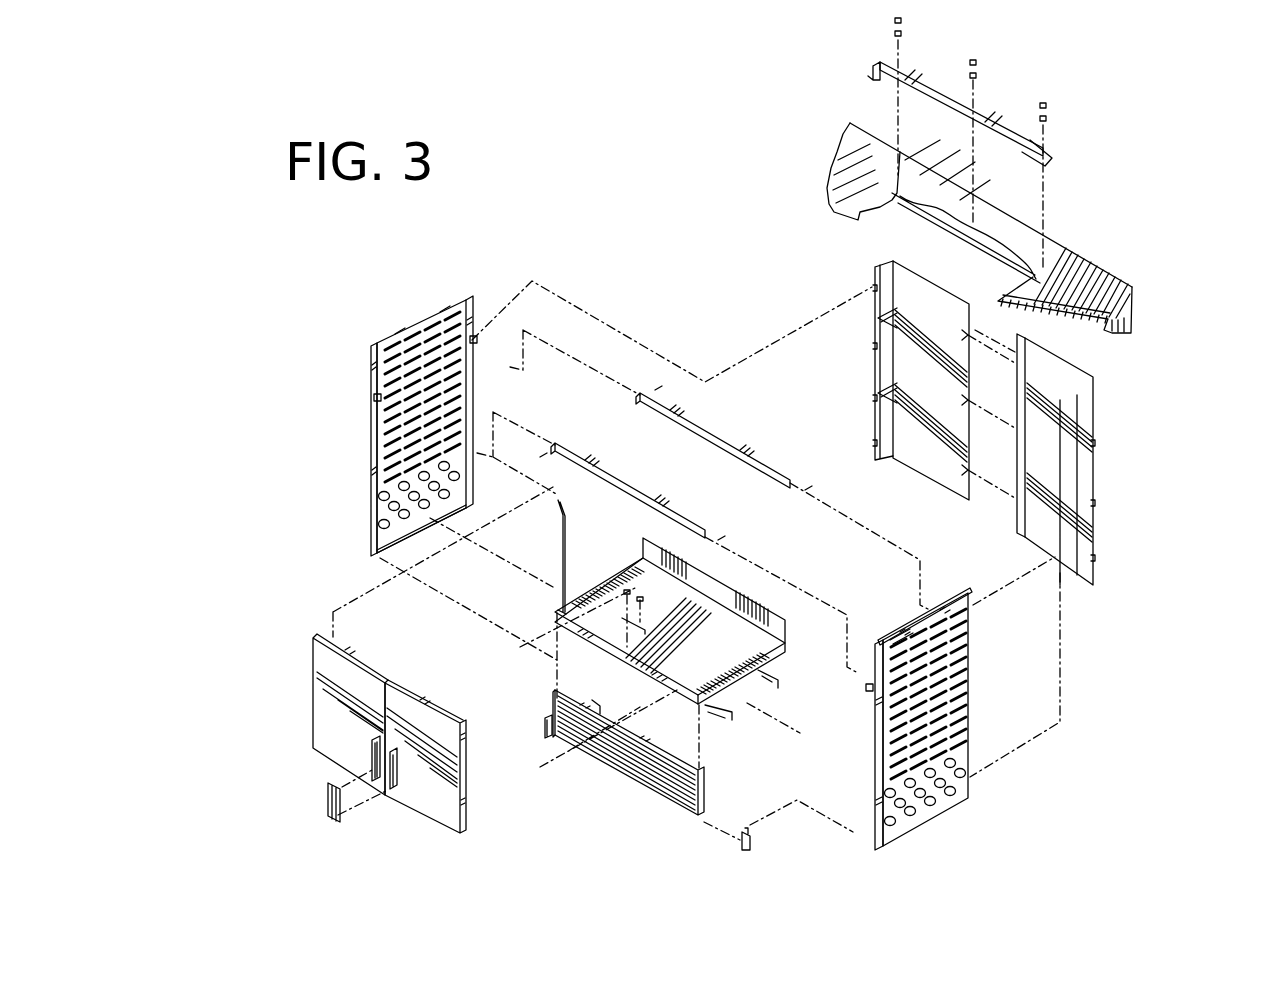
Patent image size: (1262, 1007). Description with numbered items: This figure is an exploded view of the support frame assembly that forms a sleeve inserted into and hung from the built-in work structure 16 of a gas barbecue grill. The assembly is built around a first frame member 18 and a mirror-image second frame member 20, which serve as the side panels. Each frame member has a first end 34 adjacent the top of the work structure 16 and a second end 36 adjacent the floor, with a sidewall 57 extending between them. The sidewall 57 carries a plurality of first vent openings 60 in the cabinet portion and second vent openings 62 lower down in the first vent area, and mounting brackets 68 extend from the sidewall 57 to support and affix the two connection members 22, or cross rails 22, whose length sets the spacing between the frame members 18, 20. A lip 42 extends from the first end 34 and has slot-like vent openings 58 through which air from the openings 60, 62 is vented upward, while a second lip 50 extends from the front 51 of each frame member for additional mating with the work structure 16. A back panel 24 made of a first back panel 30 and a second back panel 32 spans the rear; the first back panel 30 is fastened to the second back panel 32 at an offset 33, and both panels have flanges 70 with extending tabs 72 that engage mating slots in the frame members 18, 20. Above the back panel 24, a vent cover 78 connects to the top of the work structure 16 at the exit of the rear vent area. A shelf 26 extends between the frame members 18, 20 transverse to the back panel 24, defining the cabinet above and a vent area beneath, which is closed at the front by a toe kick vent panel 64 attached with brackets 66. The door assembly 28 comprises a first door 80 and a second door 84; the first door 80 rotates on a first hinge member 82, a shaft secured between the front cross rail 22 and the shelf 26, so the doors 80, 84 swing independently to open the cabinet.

The work structure 16 is at (1100, 272).
The vent cover 78 is at (1010, 125).
The first back panel 30 is at (915, 292).
The second back panel 32 is at (1060, 375).
The flange 70 is at (878, 366).
The extending tab 72 is at (875, 280).
The back panel 24 is at (1150, 405).
The offset 33 is at (1012, 478).
The connection member 22 is at (740, 442).
The shelf 26 is at (750, 592).
The first hinge member 82 is at (560, 552).
The first frame member 18 is at (691, 542).
The second frame member 20 is at (903, 712).
The first end 34 is at (430, 315).
The first vent openings 60 is at (440, 355).
The sidewall 57 is at (390, 427).
The second vent openings 62 is at (400, 508).
The second end 36 is at (373, 555).
The mounting bracket 68 is at (474, 340).
The front 51 is at (888, 835).
The vent openings 58 is at (958, 595).
The lip 42 is at (897, 630).
The second lip 50 is at (877, 828).
The first door 80 is at (323, 722).
The second door 84 is at (438, 725).
The door assembly 28 is at (268, 802).
The toe kick vent panel 64 is at (650, 792).
The bracket 66 is at (550, 728).